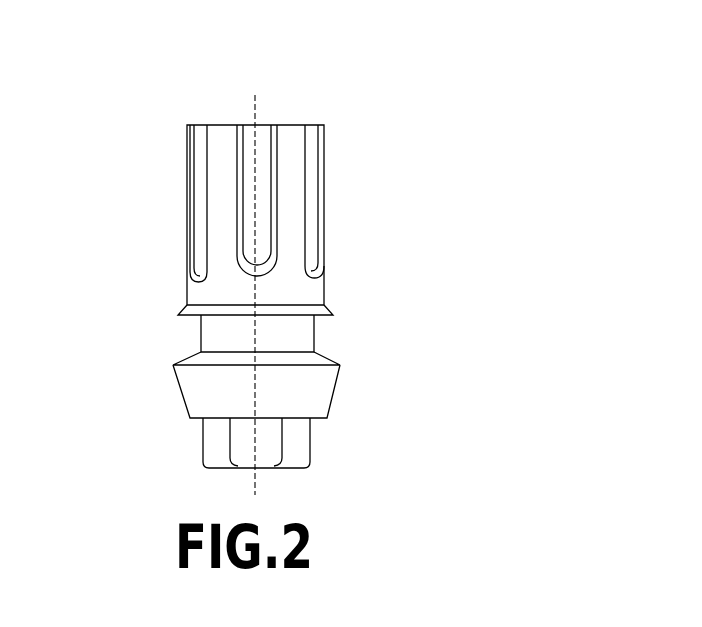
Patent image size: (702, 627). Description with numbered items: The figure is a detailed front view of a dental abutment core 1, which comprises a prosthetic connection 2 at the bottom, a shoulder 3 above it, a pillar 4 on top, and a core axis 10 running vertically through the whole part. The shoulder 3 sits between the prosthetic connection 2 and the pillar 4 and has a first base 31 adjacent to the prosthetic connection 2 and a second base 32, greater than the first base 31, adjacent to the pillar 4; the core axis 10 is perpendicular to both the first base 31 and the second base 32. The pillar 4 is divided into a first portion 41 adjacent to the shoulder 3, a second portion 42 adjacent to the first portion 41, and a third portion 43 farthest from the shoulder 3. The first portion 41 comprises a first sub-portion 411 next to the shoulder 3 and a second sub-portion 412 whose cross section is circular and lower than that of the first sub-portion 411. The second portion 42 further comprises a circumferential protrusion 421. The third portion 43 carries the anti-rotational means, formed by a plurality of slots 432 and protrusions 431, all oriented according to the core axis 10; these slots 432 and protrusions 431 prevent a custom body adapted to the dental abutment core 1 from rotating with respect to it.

The dental abutment core 1 is at (478, 92).
The prosthetic connection 2 is at (311, 447).
The shoulder 3 is at (234, 406).
The pillar 4 is at (284, 245).
The core axis 10 is at (250, 100).
The first base 31 is at (192, 420).
The second base 32 is at (185, 357).
The first portion 41 is at (242, 327).
The second portion 42 is at (252, 279).
The third portion 43 is at (241, 215).
The first sub-portion 411 is at (190, 362).
The second sub-portion 412 is at (194, 326).
The circumferential protrusion 421 is at (186, 302).
The protrusions 431 is at (214, 192).
The slots 432 is at (242, 151).